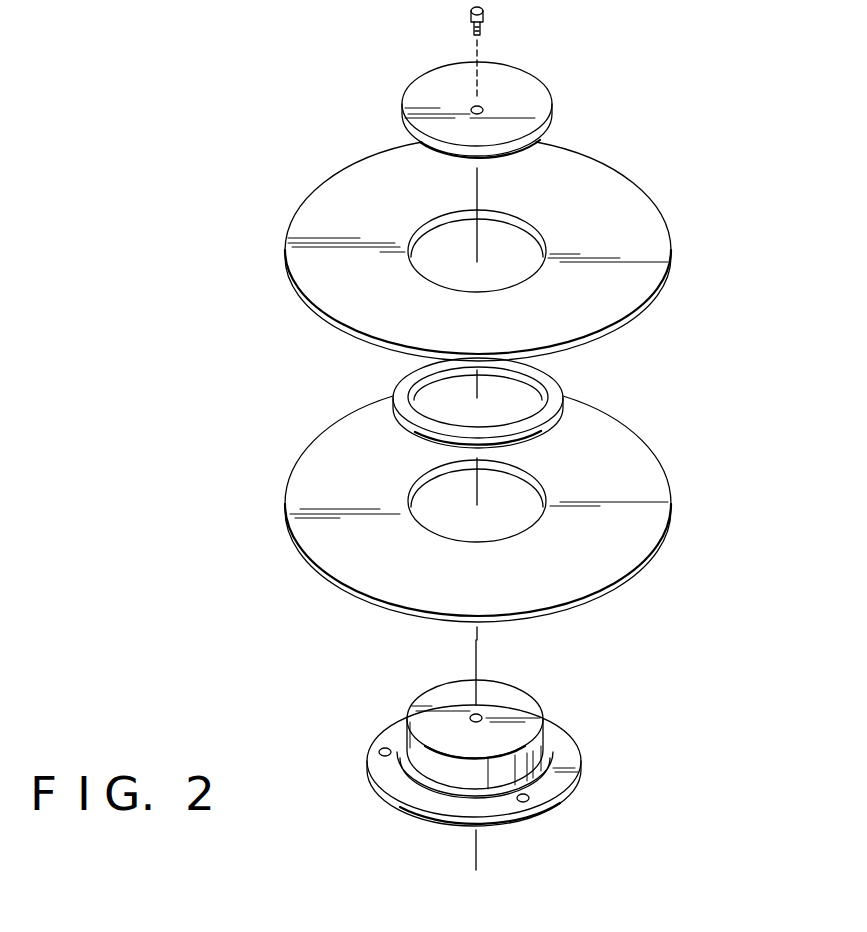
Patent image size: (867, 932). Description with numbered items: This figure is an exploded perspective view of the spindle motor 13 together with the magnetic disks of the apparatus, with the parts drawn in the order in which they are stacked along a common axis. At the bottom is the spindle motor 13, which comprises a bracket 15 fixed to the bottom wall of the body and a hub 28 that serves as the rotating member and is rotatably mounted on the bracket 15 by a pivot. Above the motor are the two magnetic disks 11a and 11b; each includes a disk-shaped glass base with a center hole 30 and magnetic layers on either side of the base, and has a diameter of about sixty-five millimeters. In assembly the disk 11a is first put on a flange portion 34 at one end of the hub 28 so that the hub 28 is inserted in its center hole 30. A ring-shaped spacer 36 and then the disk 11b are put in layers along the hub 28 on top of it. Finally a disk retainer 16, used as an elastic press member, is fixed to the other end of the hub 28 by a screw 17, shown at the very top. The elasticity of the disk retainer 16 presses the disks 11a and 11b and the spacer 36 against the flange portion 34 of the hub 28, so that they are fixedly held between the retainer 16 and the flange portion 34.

The spindle motor 13 is at (340, 724).
The bracket 15 is at (568, 793).
The disk retainer 16 is at (548, 98).
The screw 17 is at (484, 13).
The hub 28 is at (525, 704).
The center hole 30 is at (520, 246).
The flange portion 34 is at (452, 792).
The ring-shaped spacer 36 is at (563, 388).
The magnetic disk 11a is at (672, 500).
The magnetic disk 11b is at (672, 245).